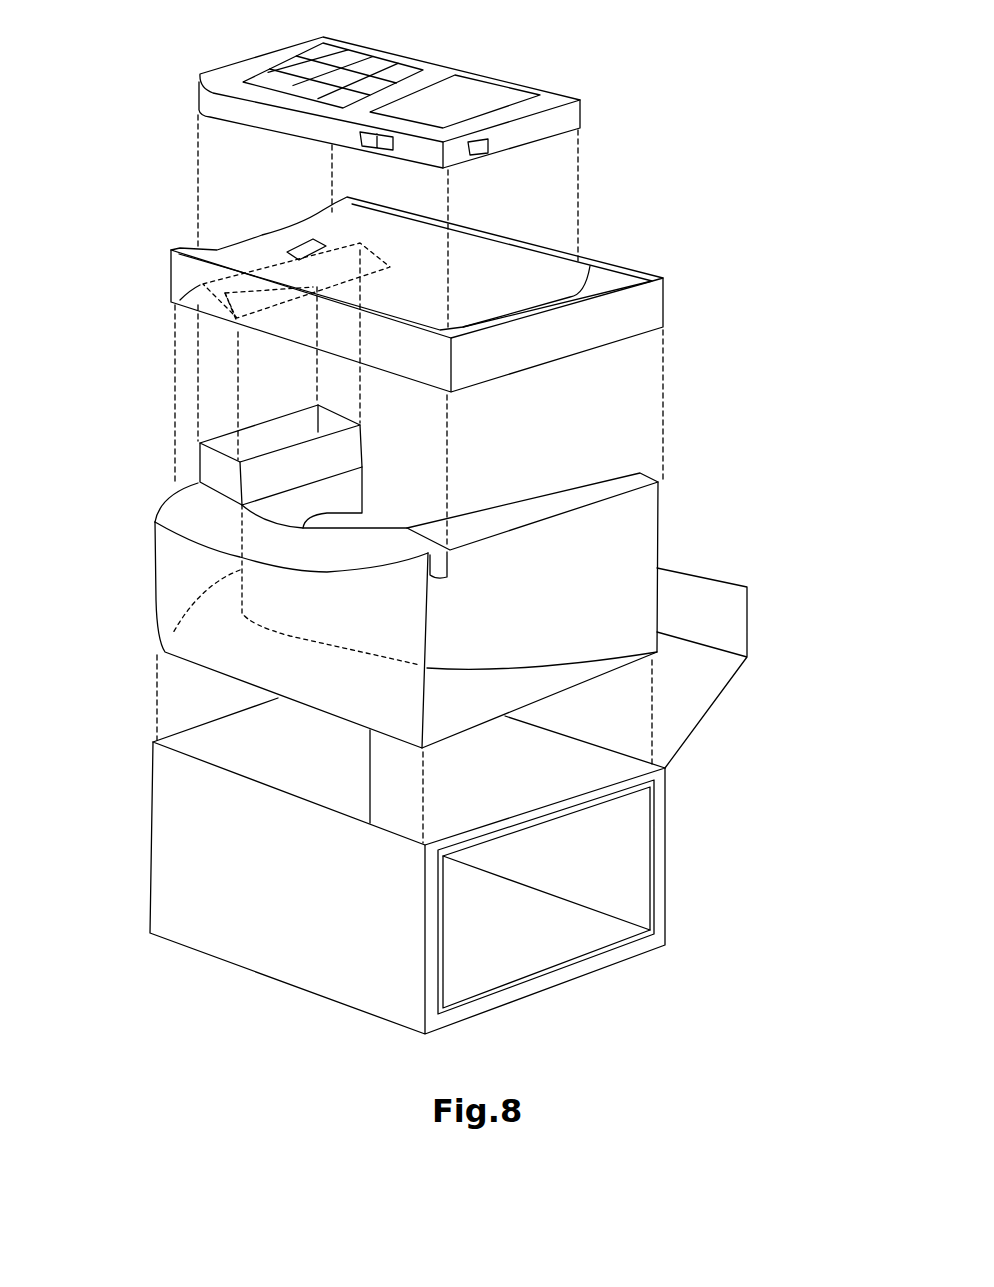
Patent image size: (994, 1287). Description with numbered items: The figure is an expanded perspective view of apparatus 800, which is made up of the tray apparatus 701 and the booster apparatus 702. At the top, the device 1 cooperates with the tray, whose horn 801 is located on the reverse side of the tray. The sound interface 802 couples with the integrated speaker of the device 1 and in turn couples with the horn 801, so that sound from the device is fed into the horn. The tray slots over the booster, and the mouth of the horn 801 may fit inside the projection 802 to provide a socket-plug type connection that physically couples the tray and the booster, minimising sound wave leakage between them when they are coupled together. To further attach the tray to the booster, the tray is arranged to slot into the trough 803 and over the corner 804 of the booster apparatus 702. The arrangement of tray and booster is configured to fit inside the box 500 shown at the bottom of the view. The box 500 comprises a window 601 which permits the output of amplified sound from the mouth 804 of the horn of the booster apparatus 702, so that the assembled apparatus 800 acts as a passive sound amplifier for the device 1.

The apparatus 800 is at (746, 42).
The device 1 is at (582, 99).
The tray apparatus 701 is at (665, 305).
The horn 801 is at (193, 308).
The sound interface 802 is at (303, 240).
The booster apparatus 702 is at (660, 478).
The trough 803 is at (447, 568).
The corner 804 is at (660, 490).
The box 500 is at (150, 745).
The window 601 is at (655, 885).